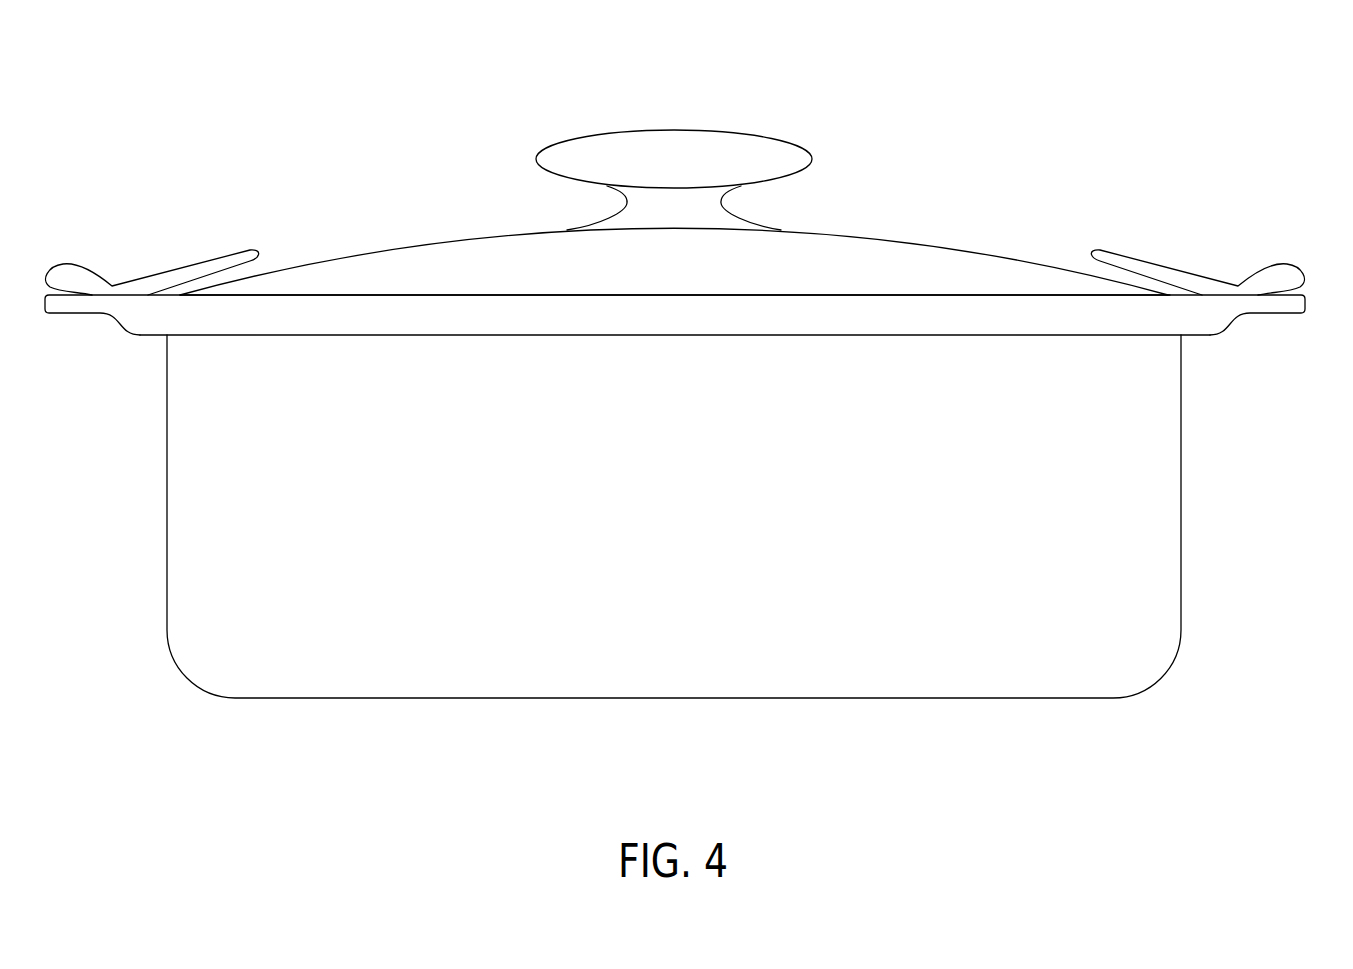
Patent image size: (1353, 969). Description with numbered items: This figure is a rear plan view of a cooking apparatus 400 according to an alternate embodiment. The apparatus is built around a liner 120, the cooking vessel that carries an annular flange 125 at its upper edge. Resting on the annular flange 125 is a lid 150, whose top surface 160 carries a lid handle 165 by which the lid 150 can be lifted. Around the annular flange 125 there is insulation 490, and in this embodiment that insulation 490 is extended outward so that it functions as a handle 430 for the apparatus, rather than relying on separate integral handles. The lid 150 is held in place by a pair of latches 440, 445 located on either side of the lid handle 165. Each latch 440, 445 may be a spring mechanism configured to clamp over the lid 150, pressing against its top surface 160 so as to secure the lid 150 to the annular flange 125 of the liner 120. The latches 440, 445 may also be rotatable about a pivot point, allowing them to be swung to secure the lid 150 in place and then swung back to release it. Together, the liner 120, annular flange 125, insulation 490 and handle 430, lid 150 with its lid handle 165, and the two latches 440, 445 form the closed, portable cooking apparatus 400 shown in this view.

The cooking apparatus 400 is at (170, 86).
The liner 120 is at (1181, 458).
The annular flange 125 is at (948, 339).
The handle 430 is at (68, 315).
The insulation 490 is at (858, 322).
The lid 150 is at (658, 273).
The top surface 160 is at (893, 265).
The lid handle 165 is at (712, 130).
The latch 440 is at (158, 274).
The latch 445 is at (1205, 278).